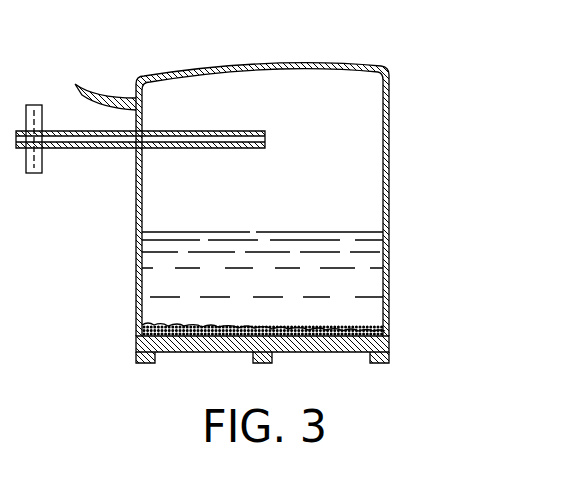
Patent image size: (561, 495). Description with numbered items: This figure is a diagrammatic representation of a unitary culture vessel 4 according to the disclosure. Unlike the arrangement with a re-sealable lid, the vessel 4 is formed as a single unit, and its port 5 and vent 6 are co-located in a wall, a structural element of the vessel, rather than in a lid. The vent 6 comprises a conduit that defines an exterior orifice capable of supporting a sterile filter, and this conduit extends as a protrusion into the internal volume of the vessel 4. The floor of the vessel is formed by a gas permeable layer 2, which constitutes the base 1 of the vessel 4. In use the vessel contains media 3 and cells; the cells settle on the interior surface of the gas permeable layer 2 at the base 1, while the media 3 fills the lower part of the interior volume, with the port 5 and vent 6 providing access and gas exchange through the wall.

The base 1 is at (392, 380).
The gas permeable layer 2 is at (389, 345).
The media 3 is at (372, 281).
The vessel 4 is at (389, 108).
The port 5 is at (102, 86).
The vent 6 is at (94, 149).